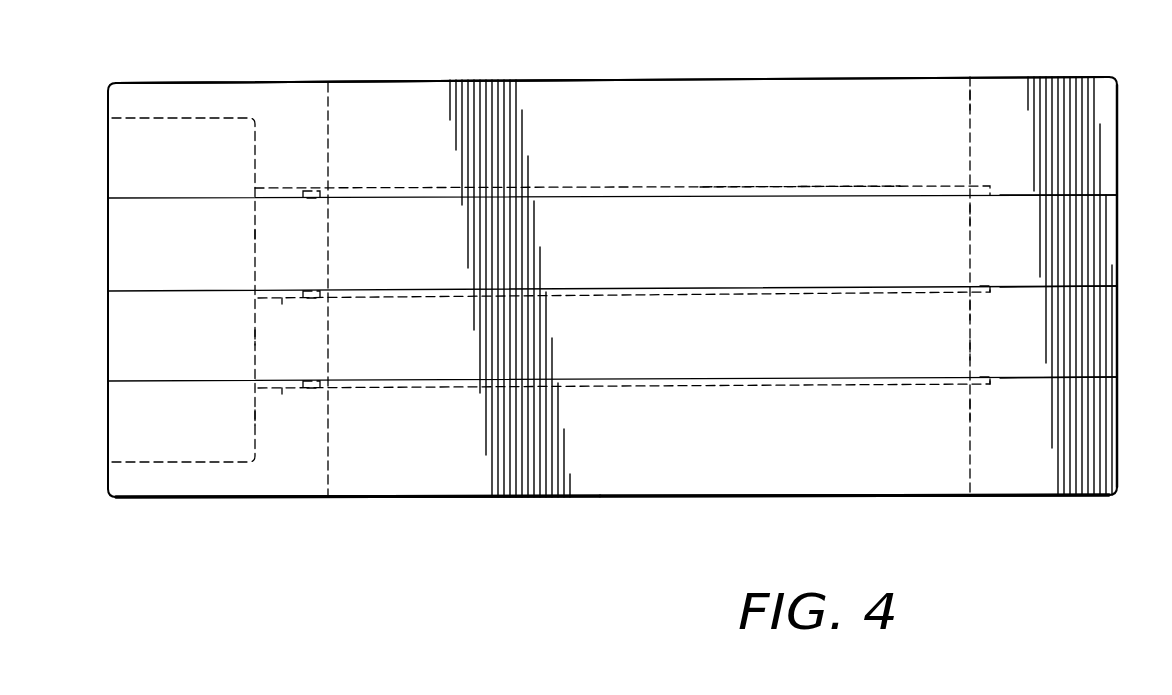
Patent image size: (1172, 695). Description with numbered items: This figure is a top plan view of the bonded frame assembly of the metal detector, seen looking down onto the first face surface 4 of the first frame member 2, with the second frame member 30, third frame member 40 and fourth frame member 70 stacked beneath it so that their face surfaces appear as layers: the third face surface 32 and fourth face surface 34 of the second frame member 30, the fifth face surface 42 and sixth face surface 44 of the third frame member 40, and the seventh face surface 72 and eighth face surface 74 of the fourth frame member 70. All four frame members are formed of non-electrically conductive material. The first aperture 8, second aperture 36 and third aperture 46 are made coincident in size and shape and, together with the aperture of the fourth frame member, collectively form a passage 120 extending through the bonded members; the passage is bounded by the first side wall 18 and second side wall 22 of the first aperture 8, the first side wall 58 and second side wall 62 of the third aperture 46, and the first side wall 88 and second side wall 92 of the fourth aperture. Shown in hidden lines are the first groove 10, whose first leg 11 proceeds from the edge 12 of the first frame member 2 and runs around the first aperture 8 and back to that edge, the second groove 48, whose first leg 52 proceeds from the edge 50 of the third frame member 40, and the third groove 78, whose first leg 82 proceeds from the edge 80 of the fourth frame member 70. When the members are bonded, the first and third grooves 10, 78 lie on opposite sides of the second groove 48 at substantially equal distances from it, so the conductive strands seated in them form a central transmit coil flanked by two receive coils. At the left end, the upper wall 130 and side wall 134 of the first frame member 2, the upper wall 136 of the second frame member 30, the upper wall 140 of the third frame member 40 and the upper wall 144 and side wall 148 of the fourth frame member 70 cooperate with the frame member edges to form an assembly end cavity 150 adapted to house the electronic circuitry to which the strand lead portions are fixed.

The passage 120 is at (645, 44).
The first face surface 4 is at (600, 79).
The side wall 134 is at (168, 82).
The upper wall 130 is at (130, 153).
The upper wall 136 is at (126, 241).
The upper wall 140 is at (136, 351).
The upper wall 144 is at (126, 413).
The side wall 148 is at (186, 489).
The eighth face surface 74 is at (932, 498).
The edge 12 is at (252, 147).
The assembly end cavity 150 is at (253, 232).
The edge 50 is at (254, 335).
The edge 80 is at (254, 417).
The second side wall 22 is at (332, 135).
The first aperture 8 is at (330, 104).
The first side wall 18 is at (968, 102).
The second aperture 36 is at (968, 215).
The third aperture 46 is at (968, 312).
The first side wall 58 is at (968, 345).
The first side wall 88 is at (968, 408).
The first leg 11 is at (278, 188).
The first groove 10 is at (790, 186).
The second groove 48 is at (402, 299).
The first leg 52 is at (283, 300).
The third groove 78 is at (625, 390).
The first leg 82 is at (281, 398).
The second side wall 62 is at (333, 352).
The second side wall 92 is at (332, 470).
The first frame member 2 is at (697, 137).
The second frame member 30 is at (706, 247).
The third frame member 40 is at (726, 337).
The fourth frame member 70 is at (721, 451).
The third face surface 32 is at (1021, 194).
The fifth face surface 42 is at (1032, 285).
The fourth face surface 34 is at (1008, 287).
The seventh face surface 72 is at (1035, 377).
The sixth face surface 44 is at (1008, 379).